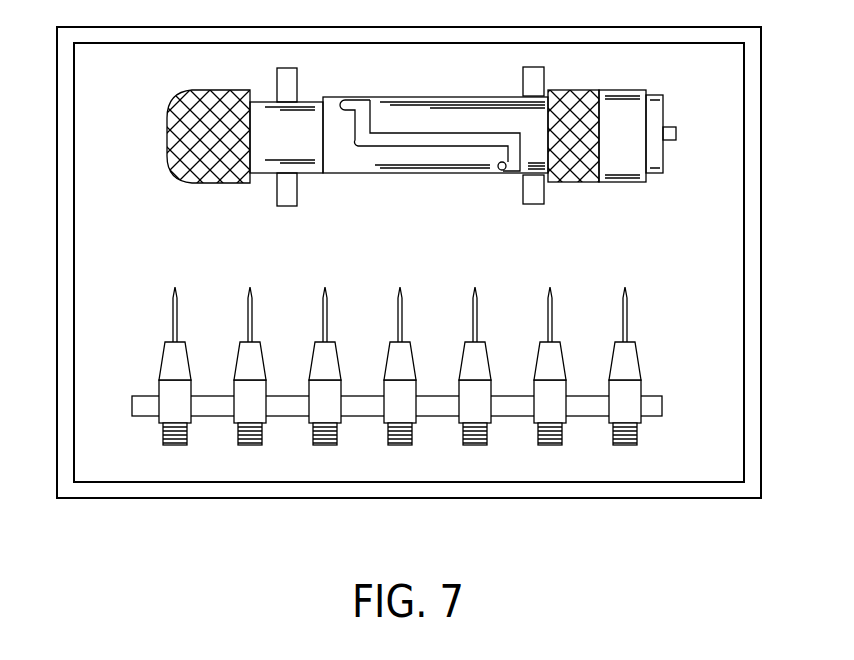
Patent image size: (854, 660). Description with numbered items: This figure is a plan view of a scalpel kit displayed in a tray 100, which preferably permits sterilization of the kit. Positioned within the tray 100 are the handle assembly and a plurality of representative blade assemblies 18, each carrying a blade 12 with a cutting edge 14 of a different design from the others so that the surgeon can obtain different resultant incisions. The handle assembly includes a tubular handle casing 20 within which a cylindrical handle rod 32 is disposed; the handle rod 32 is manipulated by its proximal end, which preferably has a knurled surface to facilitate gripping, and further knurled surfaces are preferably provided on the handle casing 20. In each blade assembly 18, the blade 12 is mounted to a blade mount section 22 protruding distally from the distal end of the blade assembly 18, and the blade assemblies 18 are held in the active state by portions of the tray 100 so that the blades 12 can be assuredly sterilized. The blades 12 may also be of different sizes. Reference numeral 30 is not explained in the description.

The tray 100 is at (241, 506).
The tubular handle casing 20 is at (421, 178).
The barrel with slot 30 is at (406, 94).
The cylindrical handle rod 32 is at (264, 100).
The cutting edge 14 is at (627, 285).
The blade 12 is at (320, 288).
The blade mount section 22 is at (232, 362).
The blade assembly 18 is at (191, 425).